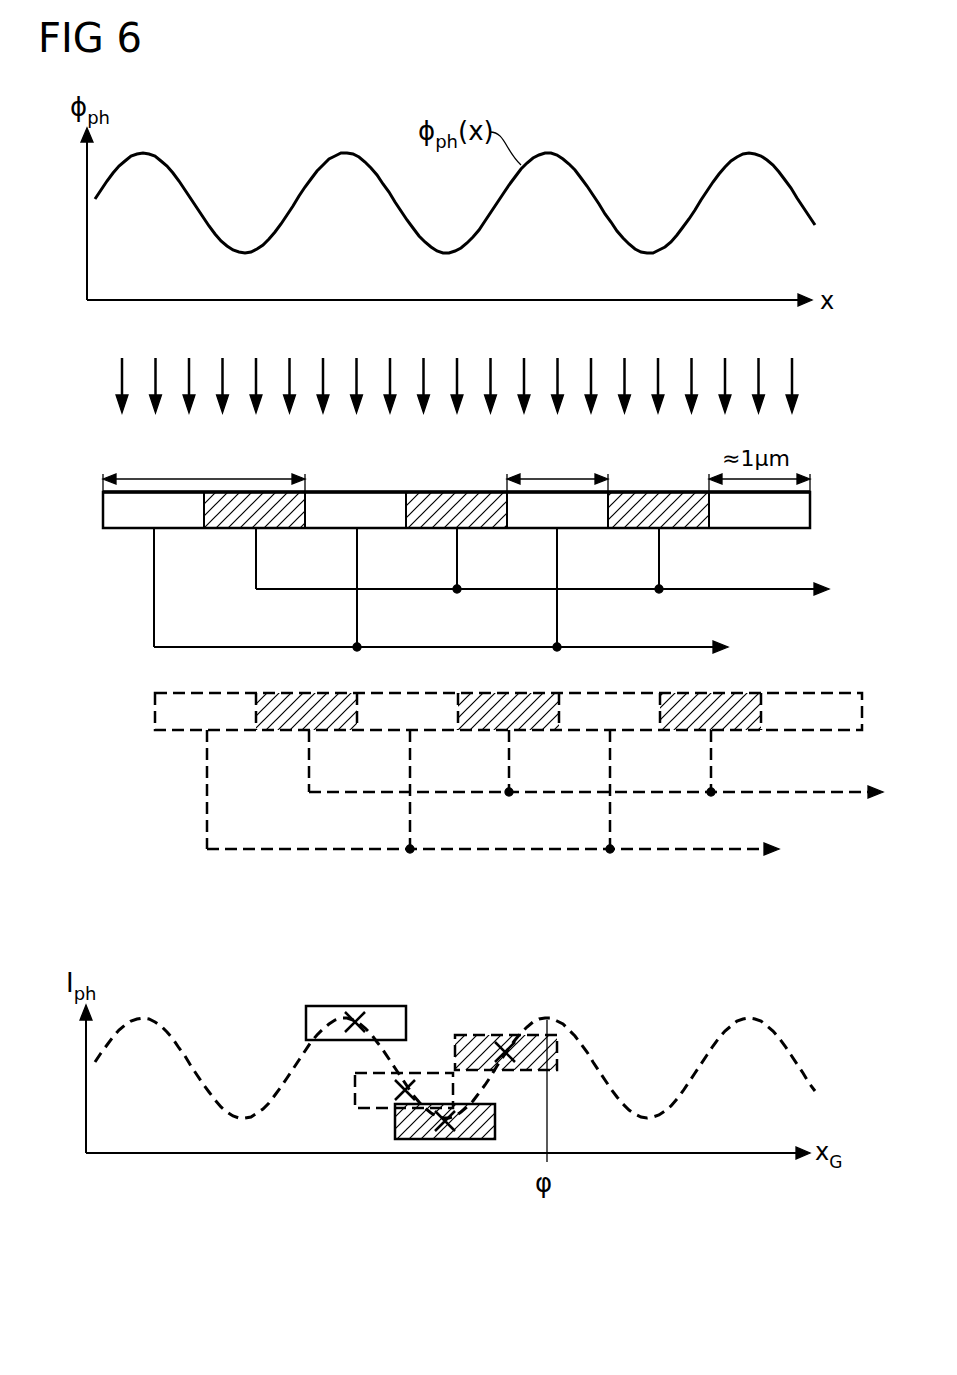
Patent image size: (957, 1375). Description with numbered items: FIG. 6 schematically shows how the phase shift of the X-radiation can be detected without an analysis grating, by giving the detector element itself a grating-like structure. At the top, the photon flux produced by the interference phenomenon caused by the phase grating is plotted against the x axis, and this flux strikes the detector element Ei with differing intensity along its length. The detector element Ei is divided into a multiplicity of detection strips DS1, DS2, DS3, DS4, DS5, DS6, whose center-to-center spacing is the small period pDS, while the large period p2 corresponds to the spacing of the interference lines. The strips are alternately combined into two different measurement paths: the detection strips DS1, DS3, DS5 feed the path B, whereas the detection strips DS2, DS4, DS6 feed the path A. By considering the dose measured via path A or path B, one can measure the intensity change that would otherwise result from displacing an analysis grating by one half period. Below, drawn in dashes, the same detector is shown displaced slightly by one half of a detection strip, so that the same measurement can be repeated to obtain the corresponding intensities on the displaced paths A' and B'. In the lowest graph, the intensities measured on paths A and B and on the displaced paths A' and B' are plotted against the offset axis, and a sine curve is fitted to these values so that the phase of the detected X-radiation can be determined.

The detector element Ei is at (92, 516).
The detection strip DS1 is at (128, 530).
The detection strip DS2 is at (228, 530).
The detection strip DS3 is at (352, 490).
The detection strip DS4 is at (450, 490).
The detection strip DS5 is at (589, 530).
The detection strip DS6 is at (646, 490).
The large period of the detector strips p2 is at (200, 478).
The small period of the detector strips pDS is at (556, 478).
The measurement path A is at (554, 858).
The measurement path B is at (452, 837).
The measurement path of displaced detector A' is at (610, 924).
The measurement path of displaced detector B' is at (507, 972).